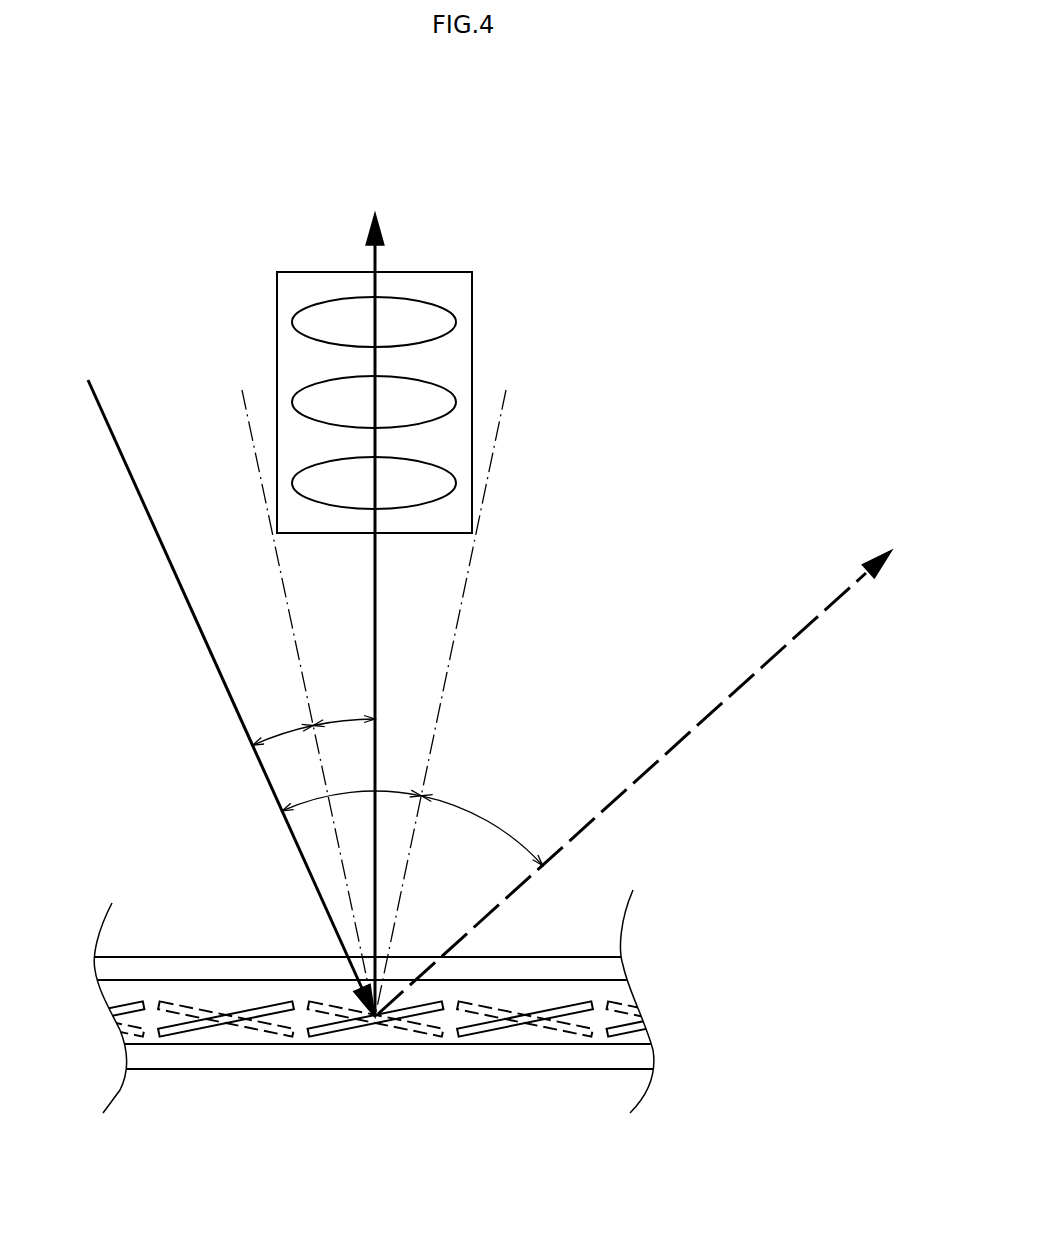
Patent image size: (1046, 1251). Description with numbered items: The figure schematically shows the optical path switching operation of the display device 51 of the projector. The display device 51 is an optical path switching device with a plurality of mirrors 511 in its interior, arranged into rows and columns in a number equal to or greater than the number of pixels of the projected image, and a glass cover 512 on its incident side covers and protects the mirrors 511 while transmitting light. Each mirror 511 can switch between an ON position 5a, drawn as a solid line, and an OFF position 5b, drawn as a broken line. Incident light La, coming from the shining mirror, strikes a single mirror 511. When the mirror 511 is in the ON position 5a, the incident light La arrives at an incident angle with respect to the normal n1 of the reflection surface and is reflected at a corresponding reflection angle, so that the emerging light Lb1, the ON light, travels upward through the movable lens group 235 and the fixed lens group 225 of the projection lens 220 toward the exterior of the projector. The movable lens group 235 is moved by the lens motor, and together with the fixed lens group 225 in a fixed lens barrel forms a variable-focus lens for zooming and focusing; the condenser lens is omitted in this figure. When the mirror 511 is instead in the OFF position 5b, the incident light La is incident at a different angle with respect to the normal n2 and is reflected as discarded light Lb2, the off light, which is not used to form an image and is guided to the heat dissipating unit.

The projection lens 220 is at (473, 300).
The fixed lens group 225 is at (457, 322).
The movable lens group 235 is at (457, 402).
The display device 51 is at (578, 957).
The mirrors 511 is at (130, 1003).
The glass cover 512 is at (208, 957).
The ON position 5a is at (363, 1027).
The OFF position 5b is at (402, 1030).
The incident light La is at (143, 507).
The emerging light Lb1 is at (377, 642).
The discarded light Lb2 is at (713, 715).
The normal n1 is at (278, 592).
The normal n2 is at (480, 590).